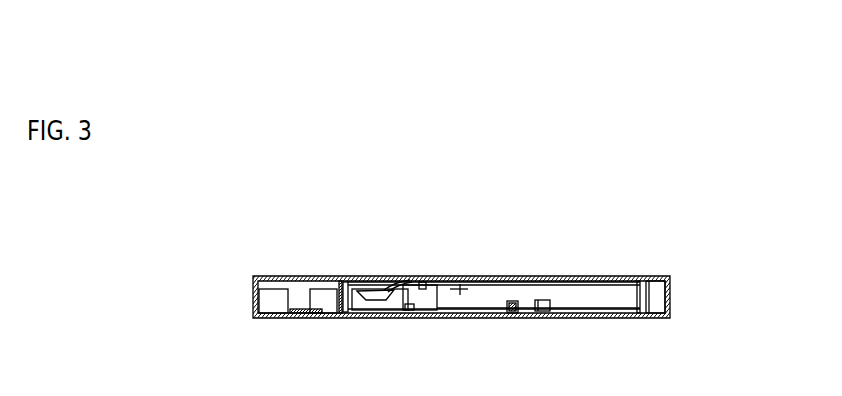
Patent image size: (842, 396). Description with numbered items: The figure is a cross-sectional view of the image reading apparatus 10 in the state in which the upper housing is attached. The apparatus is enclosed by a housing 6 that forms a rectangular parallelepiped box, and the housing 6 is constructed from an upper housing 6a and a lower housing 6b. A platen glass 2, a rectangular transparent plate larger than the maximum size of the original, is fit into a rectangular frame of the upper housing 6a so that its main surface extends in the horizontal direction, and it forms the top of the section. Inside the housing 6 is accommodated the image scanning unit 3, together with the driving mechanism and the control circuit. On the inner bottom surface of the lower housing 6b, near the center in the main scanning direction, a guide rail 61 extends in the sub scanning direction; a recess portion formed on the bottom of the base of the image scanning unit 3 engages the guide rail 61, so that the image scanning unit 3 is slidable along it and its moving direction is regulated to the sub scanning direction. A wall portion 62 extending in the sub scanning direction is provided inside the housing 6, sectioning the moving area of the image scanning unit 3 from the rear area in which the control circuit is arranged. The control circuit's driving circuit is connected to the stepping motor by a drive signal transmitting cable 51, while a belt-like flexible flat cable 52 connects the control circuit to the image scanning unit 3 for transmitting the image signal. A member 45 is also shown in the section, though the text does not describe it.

The image reading apparatus 10 is at (238, 302).
The platen glass 2 is at (496, 276).
The image scanning unit 3 is at (443, 309).
The housing 6 is at (610, 318).
The upper housing 6a is at (671, 284).
The lower housing 6b is at (671, 305).
The connector 45 is at (555, 313).
The drive signal transmitting cable 51 is at (298, 307).
The flexible flat cable 52 is at (378, 284).
The guide rail 61 is at (525, 314).
The wall portion 62 is at (340, 281).